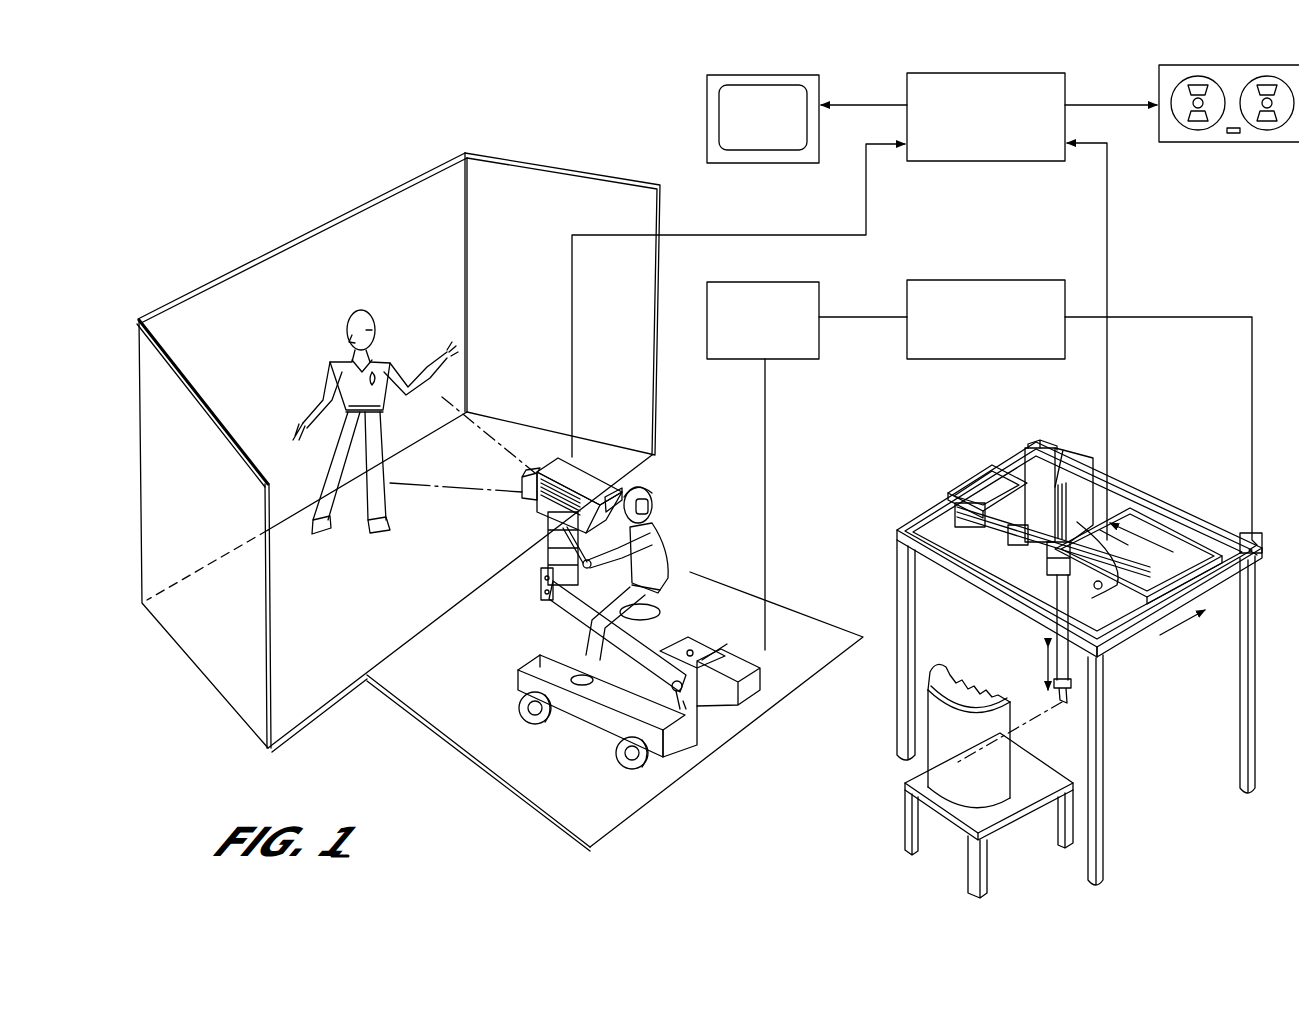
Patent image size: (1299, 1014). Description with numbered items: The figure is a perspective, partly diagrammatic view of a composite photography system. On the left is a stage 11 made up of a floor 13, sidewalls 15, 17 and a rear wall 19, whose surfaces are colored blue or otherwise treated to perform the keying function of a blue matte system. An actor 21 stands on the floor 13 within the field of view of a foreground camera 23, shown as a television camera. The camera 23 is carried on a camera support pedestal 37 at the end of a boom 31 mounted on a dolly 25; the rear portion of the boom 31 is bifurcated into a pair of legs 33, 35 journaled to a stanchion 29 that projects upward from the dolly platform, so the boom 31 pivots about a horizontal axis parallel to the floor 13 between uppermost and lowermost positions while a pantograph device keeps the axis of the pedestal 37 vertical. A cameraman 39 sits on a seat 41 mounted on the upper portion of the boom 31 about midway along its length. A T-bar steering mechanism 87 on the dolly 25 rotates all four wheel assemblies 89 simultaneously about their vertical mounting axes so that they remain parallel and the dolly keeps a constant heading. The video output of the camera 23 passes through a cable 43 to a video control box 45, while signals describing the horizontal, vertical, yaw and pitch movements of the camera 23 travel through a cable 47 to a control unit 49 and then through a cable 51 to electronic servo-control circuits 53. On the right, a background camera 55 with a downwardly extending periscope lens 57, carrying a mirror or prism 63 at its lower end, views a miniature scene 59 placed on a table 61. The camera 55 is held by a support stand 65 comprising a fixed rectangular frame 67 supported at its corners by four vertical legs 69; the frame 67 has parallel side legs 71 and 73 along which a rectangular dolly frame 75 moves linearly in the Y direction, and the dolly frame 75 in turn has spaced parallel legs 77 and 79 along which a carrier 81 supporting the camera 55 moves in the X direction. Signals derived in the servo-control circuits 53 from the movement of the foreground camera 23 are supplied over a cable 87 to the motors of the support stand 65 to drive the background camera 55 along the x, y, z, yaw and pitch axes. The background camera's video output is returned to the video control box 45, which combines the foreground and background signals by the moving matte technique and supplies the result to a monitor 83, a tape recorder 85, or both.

The stage 11 is at (283, 222).
The floor 13 is at (325, 690).
The sidewall 15 is at (215, 655).
The sidewall 17 is at (590, 192).
The rear wall 19 is at (340, 240).
The actor 21 is at (388, 352).
The foreground camera 23 is at (594, 476).
The dolly 25 is at (515, 657).
The stanchion 29 is at (740, 672).
The boom 31 is at (740, 602).
The leg 33 is at (601, 706).
The leg 35 is at (715, 645).
The camera support pedestal 37 is at (545, 578).
The cameraman 39 is at (670, 528).
The seat 41 is at (690, 594).
The cable 43 is at (690, 235).
The video control box 45 is at (1000, 72).
The cable 47 is at (768, 437).
The control unit 49 is at (808, 283).
The cable 51 is at (858, 316).
The electronic servo-control circuits 53 is at (1015, 278).
The background camera 55 is at (1092, 458).
The periscope lens 57 is at (1108, 232).
The miniature scene 59 is at (960, 690).
The table 61 is at (1028, 815).
The mirror or prism 63 is at (1068, 700).
The support stand 65 is at (1150, 480).
The fixed rectangular frame 67 is at (927, 500).
The vertical legs 69 is at (916, 625).
The side leg 71 is at (895, 528).
The side leg 73 is at (1125, 655).
The rectangular dolly frame 75 is at (1002, 460).
The leg 77 is at (1108, 540).
The leg 79 is at (1178, 575).
The carrier 81 is at (1079, 581).
The video monitor 83 is at (780, 75).
The video tape recorder 85 is at (1243, 65).
The cable 87 is at (1252, 316).
The wheel assemblies 89 is at (525, 707).